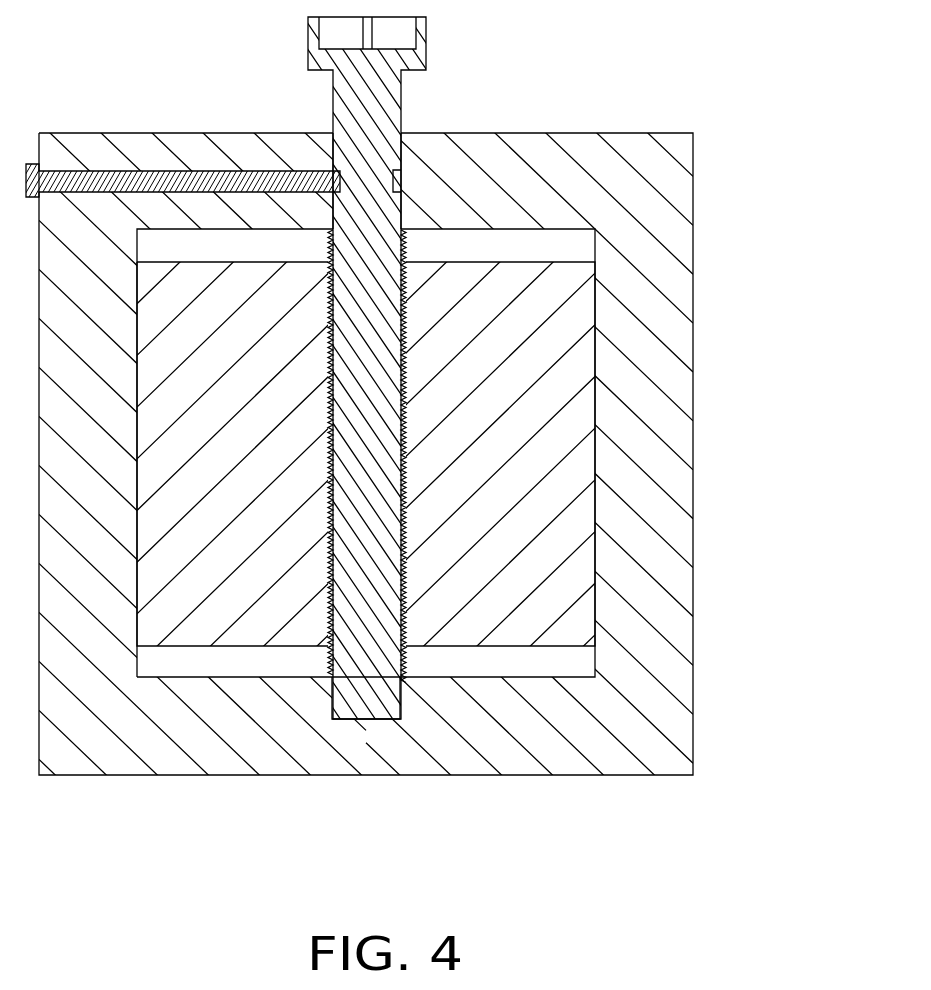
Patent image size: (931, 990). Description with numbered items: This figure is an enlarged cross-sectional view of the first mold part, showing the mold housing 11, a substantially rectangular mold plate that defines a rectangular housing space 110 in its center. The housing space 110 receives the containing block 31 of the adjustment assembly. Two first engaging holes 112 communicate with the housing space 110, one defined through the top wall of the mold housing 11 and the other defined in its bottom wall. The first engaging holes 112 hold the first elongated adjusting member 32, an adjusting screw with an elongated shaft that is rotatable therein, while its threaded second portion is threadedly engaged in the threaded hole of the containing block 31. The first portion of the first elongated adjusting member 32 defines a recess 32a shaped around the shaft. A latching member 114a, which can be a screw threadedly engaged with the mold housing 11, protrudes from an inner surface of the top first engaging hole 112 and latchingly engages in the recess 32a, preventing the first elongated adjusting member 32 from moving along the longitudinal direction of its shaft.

The mold housing 11 is at (665, 178).
The housing space 110 is at (575, 244).
The first engaging holes 112 is at (401, 207).
The latching member 114a is at (97, 171).
The containing block 31 is at (540, 418).
The first elongated adjusting member 32 is at (390, 88).
The recess 32a is at (401, 180).